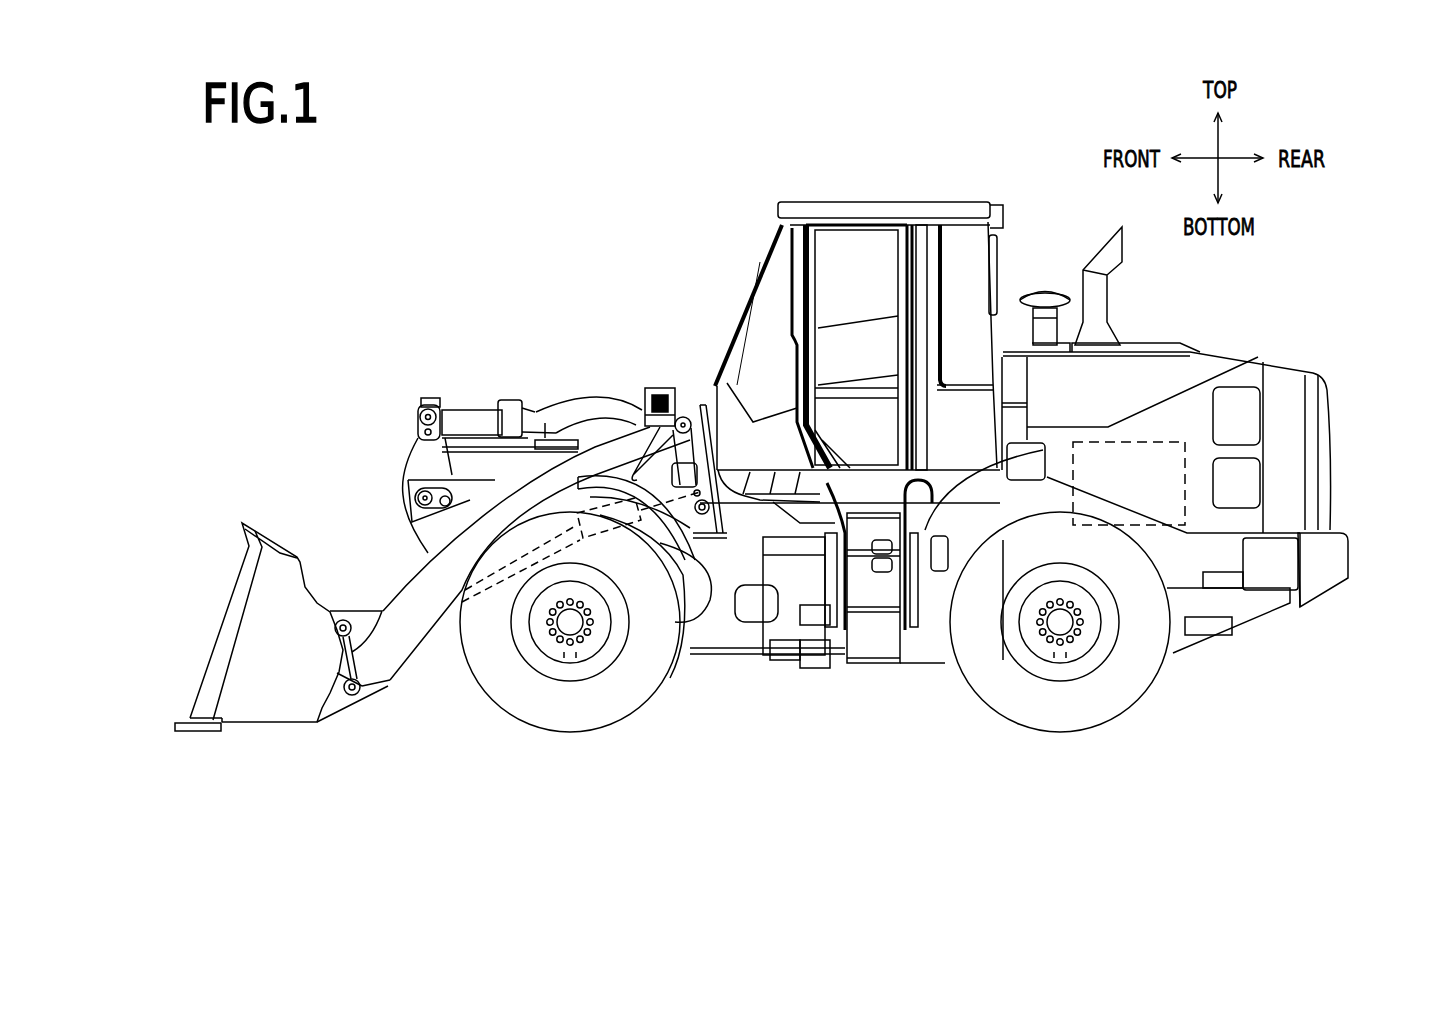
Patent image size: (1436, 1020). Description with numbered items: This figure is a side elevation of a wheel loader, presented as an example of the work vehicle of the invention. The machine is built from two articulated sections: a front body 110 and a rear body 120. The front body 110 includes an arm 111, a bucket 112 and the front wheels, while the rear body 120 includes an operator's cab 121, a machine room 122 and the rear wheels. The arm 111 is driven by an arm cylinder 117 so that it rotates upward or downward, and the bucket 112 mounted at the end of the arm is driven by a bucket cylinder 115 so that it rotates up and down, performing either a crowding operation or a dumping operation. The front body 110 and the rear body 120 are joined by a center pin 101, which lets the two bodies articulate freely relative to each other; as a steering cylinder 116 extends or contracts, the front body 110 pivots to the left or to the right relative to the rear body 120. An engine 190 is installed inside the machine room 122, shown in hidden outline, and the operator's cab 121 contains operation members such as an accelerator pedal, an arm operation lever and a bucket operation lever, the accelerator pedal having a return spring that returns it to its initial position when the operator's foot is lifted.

The center pin 101 is at (812, 545).
The front body 110 is at (675, 382).
The arm 111 is at (388, 650).
The bucket 112 is at (268, 697).
The bucket cylinder 115 is at (533, 397).
The steering cylinder 116 is at (761, 655).
The arm cylinder 117 is at (612, 540).
The rear body 120 is at (1153, 742).
The operator's cab 121 is at (913, 200).
The machine room 122 is at (1240, 382).
The engine 190 is at (1187, 492).